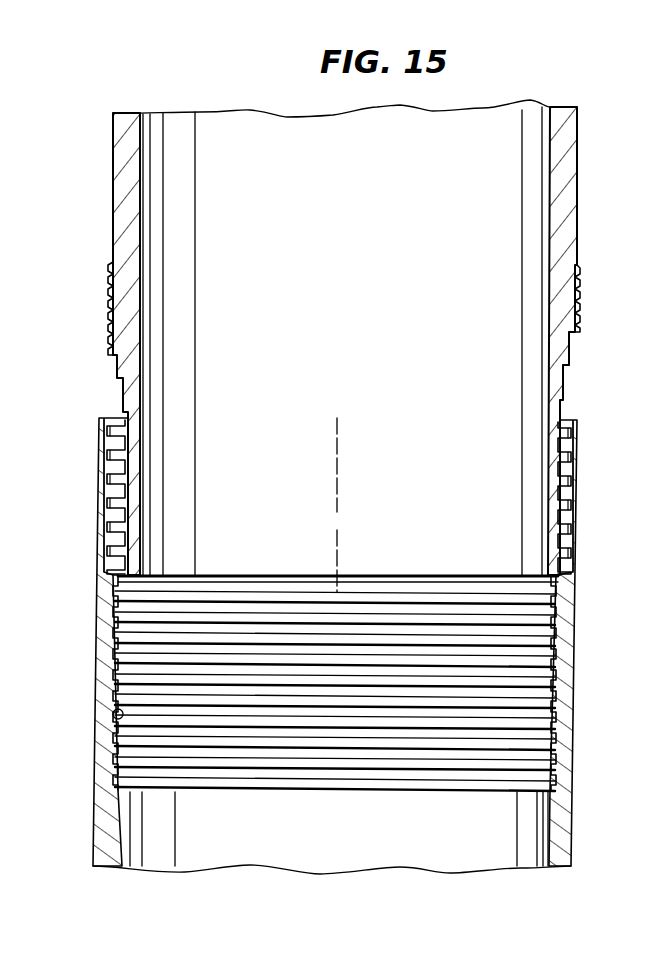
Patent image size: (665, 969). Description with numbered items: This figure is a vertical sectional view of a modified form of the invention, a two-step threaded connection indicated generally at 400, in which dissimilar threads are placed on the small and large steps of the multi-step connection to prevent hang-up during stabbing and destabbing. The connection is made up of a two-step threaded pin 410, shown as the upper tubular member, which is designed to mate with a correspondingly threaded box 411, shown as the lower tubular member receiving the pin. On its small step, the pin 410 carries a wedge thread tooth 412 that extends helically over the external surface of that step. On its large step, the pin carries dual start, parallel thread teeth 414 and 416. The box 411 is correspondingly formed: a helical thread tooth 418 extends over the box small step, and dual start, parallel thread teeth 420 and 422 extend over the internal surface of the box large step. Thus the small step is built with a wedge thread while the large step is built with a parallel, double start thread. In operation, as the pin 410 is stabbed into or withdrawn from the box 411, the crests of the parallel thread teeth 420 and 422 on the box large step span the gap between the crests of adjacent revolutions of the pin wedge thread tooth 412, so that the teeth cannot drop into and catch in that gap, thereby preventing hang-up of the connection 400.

The two-step connection 400 is at (92, 200).
The two-step threaded pin 410 is at (530, 158).
The threaded box 411 is at (524, 825).
The wedge thread tooth 412 is at (564, 388).
The parallel thread tooth 414 is at (572, 331).
The parallel thread tooth 416 is at (574, 318).
The helical thread tooth 418 is at (112, 734).
The parallel thread tooth 420 is at (100, 428).
The parallel thread tooth 422 is at (105, 474).